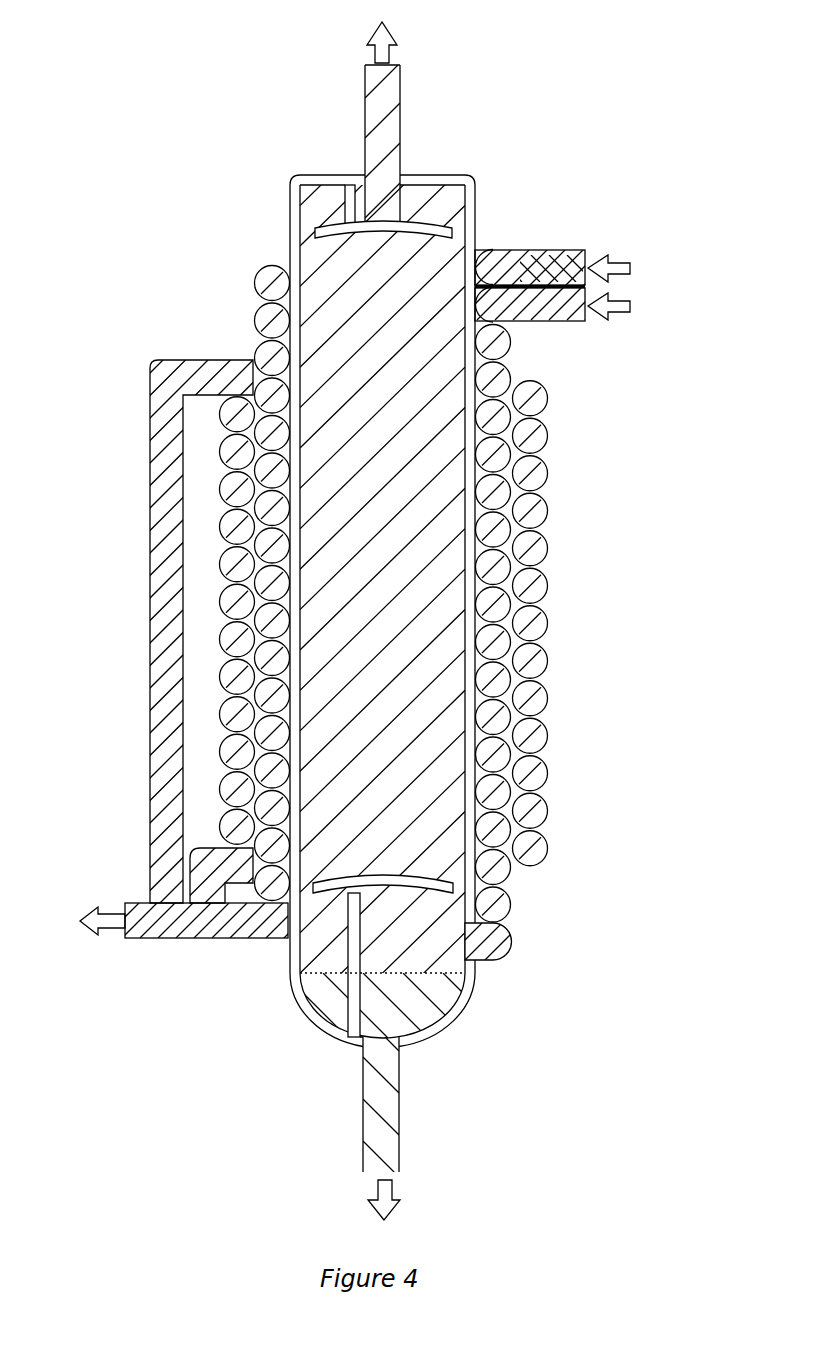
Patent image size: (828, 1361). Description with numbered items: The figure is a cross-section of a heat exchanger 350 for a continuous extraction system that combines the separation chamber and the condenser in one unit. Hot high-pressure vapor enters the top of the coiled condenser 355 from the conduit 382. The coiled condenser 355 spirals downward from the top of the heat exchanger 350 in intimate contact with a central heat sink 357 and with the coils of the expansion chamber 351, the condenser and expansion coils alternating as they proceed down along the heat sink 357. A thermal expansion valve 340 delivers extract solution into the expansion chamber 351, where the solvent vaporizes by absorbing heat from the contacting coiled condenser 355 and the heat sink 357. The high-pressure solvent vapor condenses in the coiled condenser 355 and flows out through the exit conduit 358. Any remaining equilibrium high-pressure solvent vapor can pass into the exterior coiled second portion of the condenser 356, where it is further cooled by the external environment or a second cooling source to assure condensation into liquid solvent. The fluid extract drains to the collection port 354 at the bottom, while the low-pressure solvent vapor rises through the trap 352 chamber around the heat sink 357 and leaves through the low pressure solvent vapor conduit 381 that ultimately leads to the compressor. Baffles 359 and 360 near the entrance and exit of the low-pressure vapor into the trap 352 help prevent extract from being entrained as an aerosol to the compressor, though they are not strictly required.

The heat exchanger 350 is at (318, 107).
The expansion chamber 351 is at (502, 265).
The trap 352 is at (437, 205).
The collection port 354 is at (447, 1028).
The coiled condenser 355 is at (503, 328).
The exterior coiled second portion of the condenser 356 is at (165, 363).
The heat sink 357 is at (310, 232).
The exit conduit 358 is at (172, 923).
The baffle 359 is at (330, 973).
The baffle 360 is at (343, 212).
The low pressure solvent vapor conduit 381 is at (388, 88).
The conduit 382 is at (577, 310).
The thermal expansion valve 340 is at (520, 254).